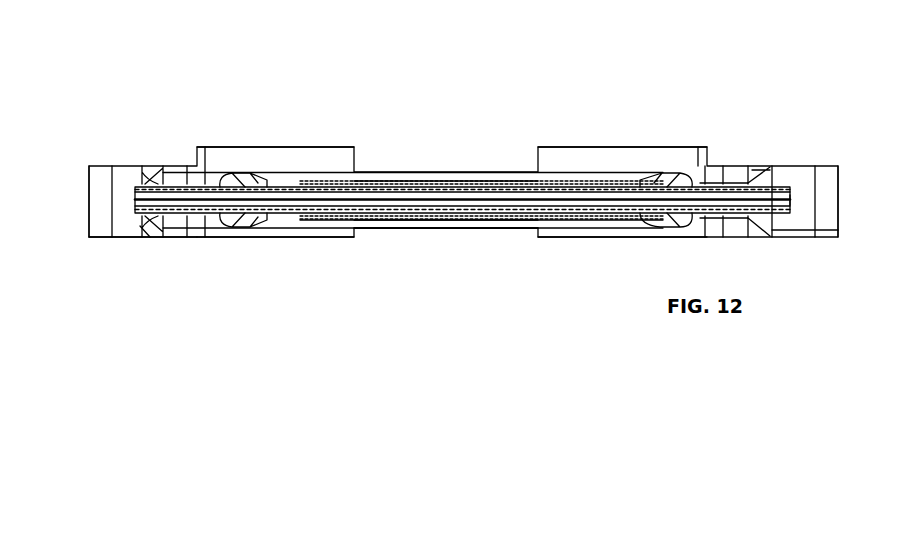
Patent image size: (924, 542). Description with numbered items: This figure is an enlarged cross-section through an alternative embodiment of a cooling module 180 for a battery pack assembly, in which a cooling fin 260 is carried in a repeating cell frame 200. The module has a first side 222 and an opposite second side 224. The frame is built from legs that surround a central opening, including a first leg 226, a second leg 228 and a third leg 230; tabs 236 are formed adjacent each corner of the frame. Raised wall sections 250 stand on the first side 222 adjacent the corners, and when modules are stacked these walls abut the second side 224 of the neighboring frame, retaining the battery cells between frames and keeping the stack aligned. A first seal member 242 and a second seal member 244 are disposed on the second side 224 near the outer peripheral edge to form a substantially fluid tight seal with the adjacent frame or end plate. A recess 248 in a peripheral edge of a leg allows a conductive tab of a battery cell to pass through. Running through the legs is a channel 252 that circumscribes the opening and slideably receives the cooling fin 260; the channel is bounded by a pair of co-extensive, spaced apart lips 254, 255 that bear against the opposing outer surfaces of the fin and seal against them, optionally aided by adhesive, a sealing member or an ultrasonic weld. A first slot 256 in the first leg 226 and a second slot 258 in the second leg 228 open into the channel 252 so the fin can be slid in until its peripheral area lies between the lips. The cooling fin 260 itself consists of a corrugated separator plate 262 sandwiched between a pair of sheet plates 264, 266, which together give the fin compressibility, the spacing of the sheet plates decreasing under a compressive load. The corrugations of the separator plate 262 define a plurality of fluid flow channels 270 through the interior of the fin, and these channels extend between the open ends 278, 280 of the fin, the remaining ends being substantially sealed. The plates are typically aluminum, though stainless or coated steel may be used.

The cooling module 180 is at (728, 87).
The repeating cell frame 200 is at (730, 164).
The first side 222 is at (113, 164).
The second side 224 is at (100, 238).
The first leg 226 is at (772, 230).
The second leg 228 is at (145, 226).
The third leg 230 is at (695, 228).
The tabs 236 is at (89, 171).
The first seal member 242 is at (595, 238).
The second seal member 244 is at (190, 238).
The recess 248 is at (537, 233).
The wall sections 250 is at (320, 147).
The channel 252 is at (652, 170).
The lip 254 is at (268, 173).
The lip 255 is at (273, 215).
The first slot 256 is at (775, 185).
The second slot 258 is at (145, 170).
The cooling fin 260 is at (503, 166).
The corrugated separator plate 262 is at (430, 205).
The sheet plate 264 is at (413, 184).
The sheet plate 266 is at (372, 212).
The fluid flow channels 270 is at (470, 190).
The open end 278 is at (790, 200).
The open end 280 is at (135, 200).